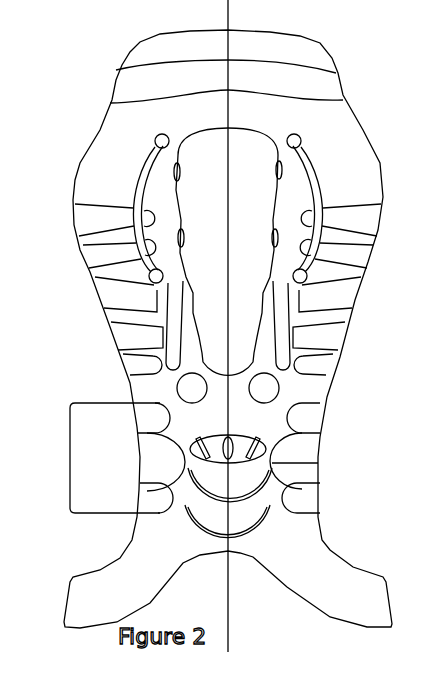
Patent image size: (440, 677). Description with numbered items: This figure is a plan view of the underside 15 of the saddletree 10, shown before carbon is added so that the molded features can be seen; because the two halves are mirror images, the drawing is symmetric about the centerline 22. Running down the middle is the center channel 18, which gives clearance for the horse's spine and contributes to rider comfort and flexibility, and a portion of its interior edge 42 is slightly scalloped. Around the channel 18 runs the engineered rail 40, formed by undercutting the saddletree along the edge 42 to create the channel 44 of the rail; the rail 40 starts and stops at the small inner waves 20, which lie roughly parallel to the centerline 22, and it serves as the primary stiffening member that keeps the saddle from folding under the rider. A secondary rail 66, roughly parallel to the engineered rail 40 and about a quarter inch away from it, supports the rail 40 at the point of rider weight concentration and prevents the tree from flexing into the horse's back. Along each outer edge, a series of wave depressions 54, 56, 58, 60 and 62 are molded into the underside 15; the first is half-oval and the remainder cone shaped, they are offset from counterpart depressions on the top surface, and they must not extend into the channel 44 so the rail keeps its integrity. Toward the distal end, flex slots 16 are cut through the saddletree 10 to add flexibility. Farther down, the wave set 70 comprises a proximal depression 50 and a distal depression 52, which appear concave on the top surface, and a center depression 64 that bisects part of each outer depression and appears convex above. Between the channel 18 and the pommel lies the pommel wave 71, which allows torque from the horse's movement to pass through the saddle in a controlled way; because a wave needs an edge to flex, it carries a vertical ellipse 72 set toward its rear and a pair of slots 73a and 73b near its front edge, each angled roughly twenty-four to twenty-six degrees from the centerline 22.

The saddletree 10 is at (354, 81).
The underside 15 is at (98, 155).
The flex slots 16 is at (133, 192).
The center channel 18 is at (257, 196).
The inner waves 20 is at (267, 393).
The centerline 22 is at (230, 645).
The engineered rail 40 is at (188, 253).
The interior edge 42 is at (193, 303).
The channel of the rail 44 is at (176, 166).
The proximal depression 50 is at (150, 500).
The distal depression 52 is at (143, 410).
The wave depression 54 is at (320, 370).
The wave depression 56 is at (335, 332).
The wave depression 58 is at (343, 300).
The wave depression 60 is at (353, 265).
The wave depression 62 is at (368, 210).
The center depression 64 is at (167, 472).
The secondary rail 66 is at (278, 350).
The wave set 70 is at (70, 468).
The pommel wave 71 is at (318, 463).
The ellipse 72 is at (228, 503).
The slot 73a is at (254, 437).
The slot 73b is at (202, 437).